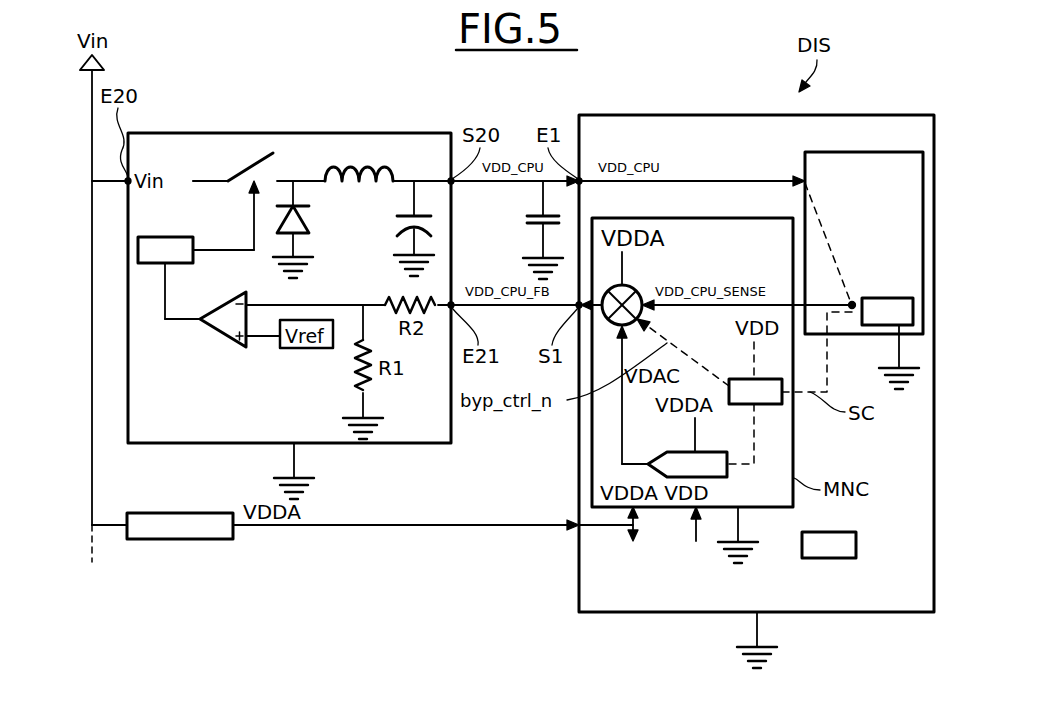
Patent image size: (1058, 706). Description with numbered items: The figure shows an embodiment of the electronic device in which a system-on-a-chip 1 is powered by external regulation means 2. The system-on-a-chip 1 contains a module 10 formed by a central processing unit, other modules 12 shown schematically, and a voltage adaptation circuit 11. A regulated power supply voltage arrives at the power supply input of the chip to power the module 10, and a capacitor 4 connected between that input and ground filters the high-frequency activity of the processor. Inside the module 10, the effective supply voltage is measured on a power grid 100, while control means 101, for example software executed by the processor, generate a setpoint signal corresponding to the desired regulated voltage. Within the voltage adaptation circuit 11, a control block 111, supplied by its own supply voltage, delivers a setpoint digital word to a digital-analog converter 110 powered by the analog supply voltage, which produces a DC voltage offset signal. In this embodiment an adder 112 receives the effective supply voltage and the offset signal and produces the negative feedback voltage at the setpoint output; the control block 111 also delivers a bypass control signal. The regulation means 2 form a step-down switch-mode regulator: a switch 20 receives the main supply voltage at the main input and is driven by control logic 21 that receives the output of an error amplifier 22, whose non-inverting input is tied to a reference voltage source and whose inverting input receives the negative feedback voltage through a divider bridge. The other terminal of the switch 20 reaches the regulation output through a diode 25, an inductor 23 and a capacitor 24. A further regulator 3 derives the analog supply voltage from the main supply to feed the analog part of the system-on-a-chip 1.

The system-on-a-chip 1 is at (756, 114).
The regulation means 2 is at (287, 132).
The regulator 3 is at (180, 540).
The capacitor 4 is at (536, 218).
The module 10 is at (865, 335).
The voltage adaptation circuit 11 is at (794, 456).
The other modules 12 is at (857, 545).
The switch 20 is at (250, 163).
The control logic 21 is at (150, 266).
The error amplifier 22 is at (226, 342).
The inductor 23 is at (386, 155).
The capacitor 24 is at (396, 233).
The diode 25 is at (312, 206).
The power grid 100 is at (853, 298).
The control means 101 is at (888, 297).
The digital-analog converter 110 is at (666, 451).
The control block 111 is at (736, 378).
The adder 112 is at (636, 289).